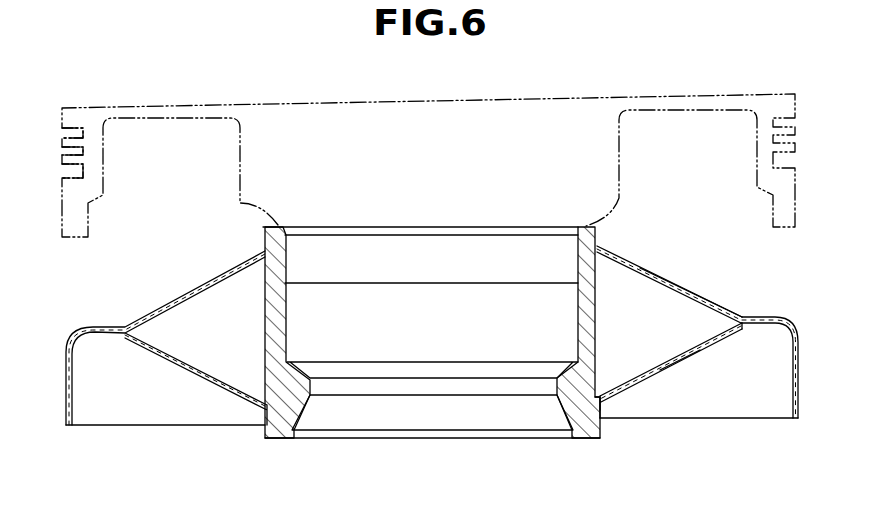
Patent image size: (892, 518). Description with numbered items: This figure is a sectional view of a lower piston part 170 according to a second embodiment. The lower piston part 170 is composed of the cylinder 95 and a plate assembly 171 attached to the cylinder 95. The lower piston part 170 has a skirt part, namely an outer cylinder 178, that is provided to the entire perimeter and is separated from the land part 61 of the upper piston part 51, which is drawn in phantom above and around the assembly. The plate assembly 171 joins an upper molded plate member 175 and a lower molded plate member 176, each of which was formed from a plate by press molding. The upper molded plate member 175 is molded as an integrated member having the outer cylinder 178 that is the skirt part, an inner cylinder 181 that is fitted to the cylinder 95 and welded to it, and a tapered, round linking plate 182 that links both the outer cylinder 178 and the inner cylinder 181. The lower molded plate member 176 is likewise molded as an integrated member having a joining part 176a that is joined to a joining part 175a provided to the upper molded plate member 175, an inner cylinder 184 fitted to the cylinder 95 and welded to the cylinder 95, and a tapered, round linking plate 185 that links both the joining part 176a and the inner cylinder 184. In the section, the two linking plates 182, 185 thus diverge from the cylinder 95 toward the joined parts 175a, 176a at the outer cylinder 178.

The upper piston part 51 is at (447, 102).
The land part 61 is at (61, 139).
The cylinder 95 is at (427, 438).
The lower piston part 170 is at (80, 327).
The plate assembly 171 is at (153, 428).
The upper molded plate member 175 is at (655, 276).
The joining part 175a is at (762, 316).
The lower molded plate member 176 is at (667, 366).
The joining part 176a is at (748, 328).
The outer cylinder 178 is at (798, 398).
The inner cylinder 181 is at (598, 232).
The linking plate 182 is at (692, 293).
The inner cylinder 184 is at (600, 410).
The linking plate 185 is at (695, 352).